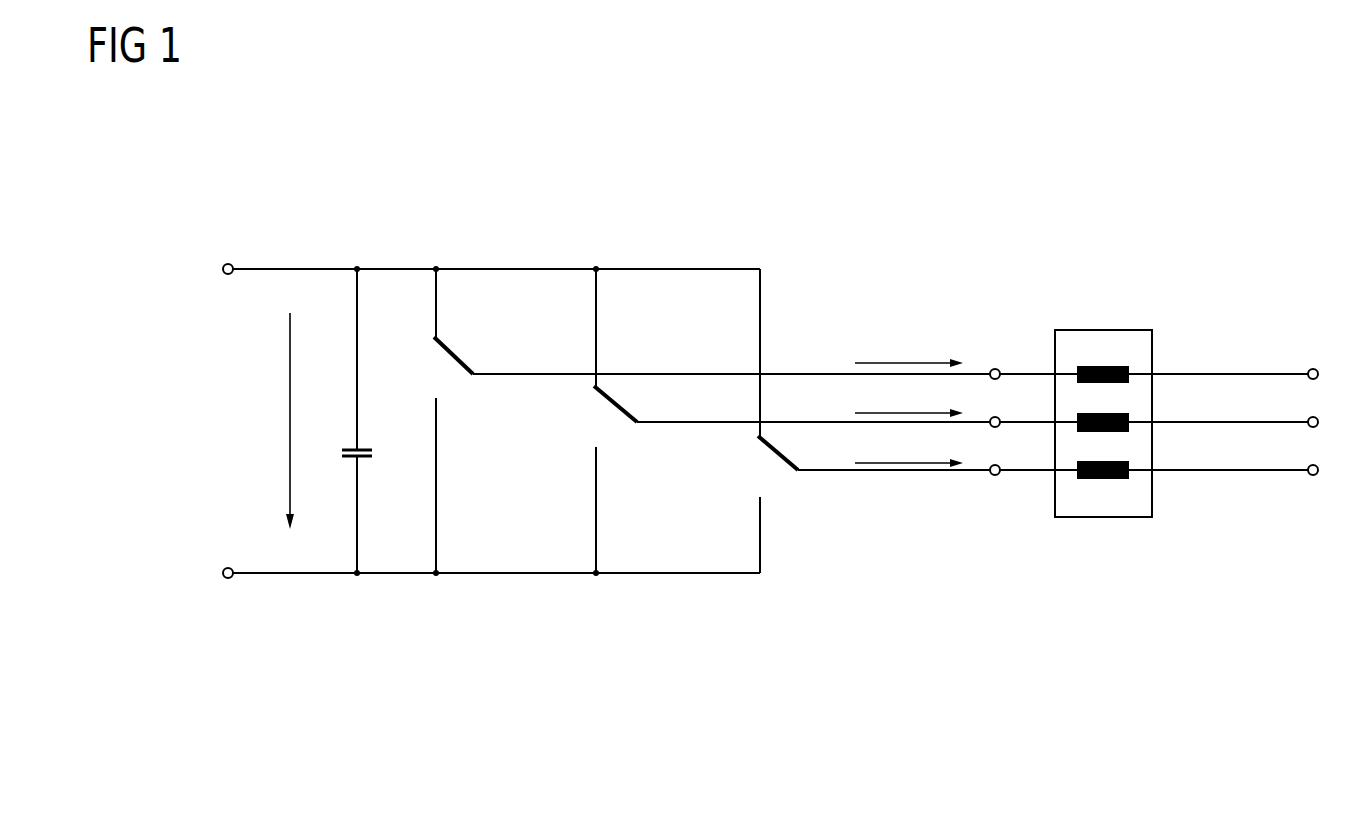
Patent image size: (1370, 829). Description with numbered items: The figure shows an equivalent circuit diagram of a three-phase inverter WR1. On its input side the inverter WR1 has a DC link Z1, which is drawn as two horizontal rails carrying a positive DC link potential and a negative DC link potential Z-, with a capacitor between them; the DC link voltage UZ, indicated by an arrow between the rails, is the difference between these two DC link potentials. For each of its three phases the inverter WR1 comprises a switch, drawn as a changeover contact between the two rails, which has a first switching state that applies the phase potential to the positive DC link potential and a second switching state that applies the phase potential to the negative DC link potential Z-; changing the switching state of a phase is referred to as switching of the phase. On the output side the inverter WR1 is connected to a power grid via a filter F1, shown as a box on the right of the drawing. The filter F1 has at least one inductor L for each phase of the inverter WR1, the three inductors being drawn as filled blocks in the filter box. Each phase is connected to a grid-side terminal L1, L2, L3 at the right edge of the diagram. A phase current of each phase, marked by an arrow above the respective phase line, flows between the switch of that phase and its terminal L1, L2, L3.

The DC link Z1 is at (391, 256).
The inverter WR1 is at (509, 256).
The DC link voltage UZ is at (305, 421).
The negative DC link potential Z- is at (208, 574).
The filter F1 is at (1154, 396).
The inductor L is at (1104, 366).
The grid-side terminal L1 is at (1333, 375).
The grid-side terminal L2 is at (1333, 423).
The grid-side terminal L3 is at (1333, 471).